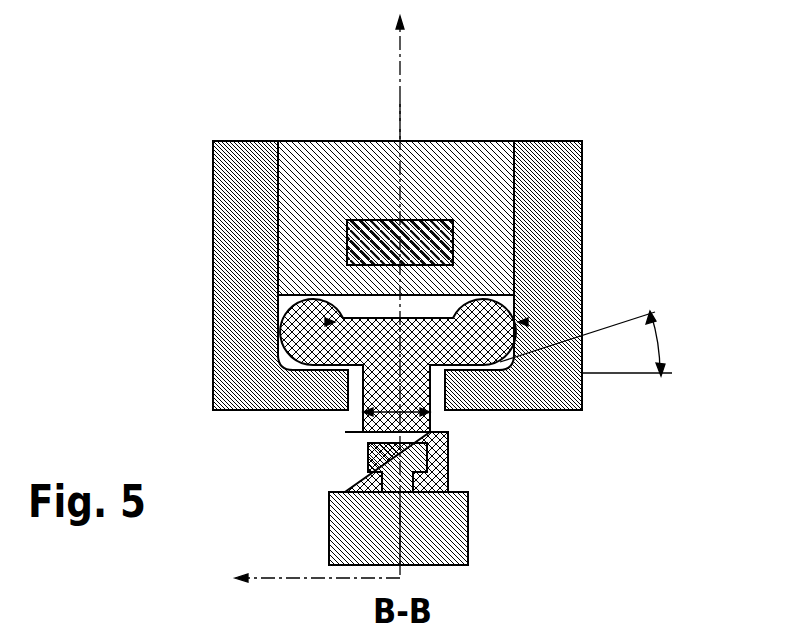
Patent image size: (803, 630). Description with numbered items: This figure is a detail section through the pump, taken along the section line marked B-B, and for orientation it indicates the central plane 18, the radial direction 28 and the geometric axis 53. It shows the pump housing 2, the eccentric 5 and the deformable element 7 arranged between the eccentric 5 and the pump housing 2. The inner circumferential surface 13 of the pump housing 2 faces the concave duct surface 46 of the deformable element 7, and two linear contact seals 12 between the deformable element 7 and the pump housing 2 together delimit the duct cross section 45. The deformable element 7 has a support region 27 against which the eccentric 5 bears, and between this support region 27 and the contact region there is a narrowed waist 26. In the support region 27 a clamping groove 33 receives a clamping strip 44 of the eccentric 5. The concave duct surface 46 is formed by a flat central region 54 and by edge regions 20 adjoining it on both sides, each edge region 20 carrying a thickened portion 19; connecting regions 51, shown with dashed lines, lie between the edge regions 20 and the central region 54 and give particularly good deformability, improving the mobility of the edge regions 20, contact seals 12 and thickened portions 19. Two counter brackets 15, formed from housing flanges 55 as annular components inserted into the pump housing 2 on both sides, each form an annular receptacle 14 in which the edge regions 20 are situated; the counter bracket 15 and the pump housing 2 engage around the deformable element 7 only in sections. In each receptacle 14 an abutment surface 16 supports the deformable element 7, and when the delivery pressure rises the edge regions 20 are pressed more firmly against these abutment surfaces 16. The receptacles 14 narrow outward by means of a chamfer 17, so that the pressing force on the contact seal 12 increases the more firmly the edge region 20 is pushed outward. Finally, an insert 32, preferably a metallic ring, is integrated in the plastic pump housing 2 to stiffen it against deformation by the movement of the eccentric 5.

The pump housing 2 is at (522, 141).
The eccentric 5 is at (470, 540).
The deformable element 7 is at (352, 445).
The linear contact seals 12 is at (250, 222).
The inner circumferential surface 13 is at (515, 255).
The annular receptacle 14 is at (278, 410).
The counter brackets 15 is at (295, 375).
The abutment surface 16 is at (280, 300).
The chamfer 17 is at (668, 340).
The central plane 18 is at (402, 133).
The thickened portions 19 is at (280, 272).
The edge regions 20 is at (333, 322).
The waist 26 is at (345, 462).
The support region 27 is at (450, 475).
The radial direction 28 is at (402, 88).
The insert 32 is at (378, 300).
The clamping groove 33 is at (332, 560).
The clamping strip 44 is at (405, 495).
The duct cross section 45 is at (400, 310).
The concave duct surface 46 is at (410, 300).
The connecting regions 51 is at (340, 420).
The geometric axis 53 is at (260, 562).
The central region 54 is at (275, 205).
The housing flanges 55 is at (583, 178).